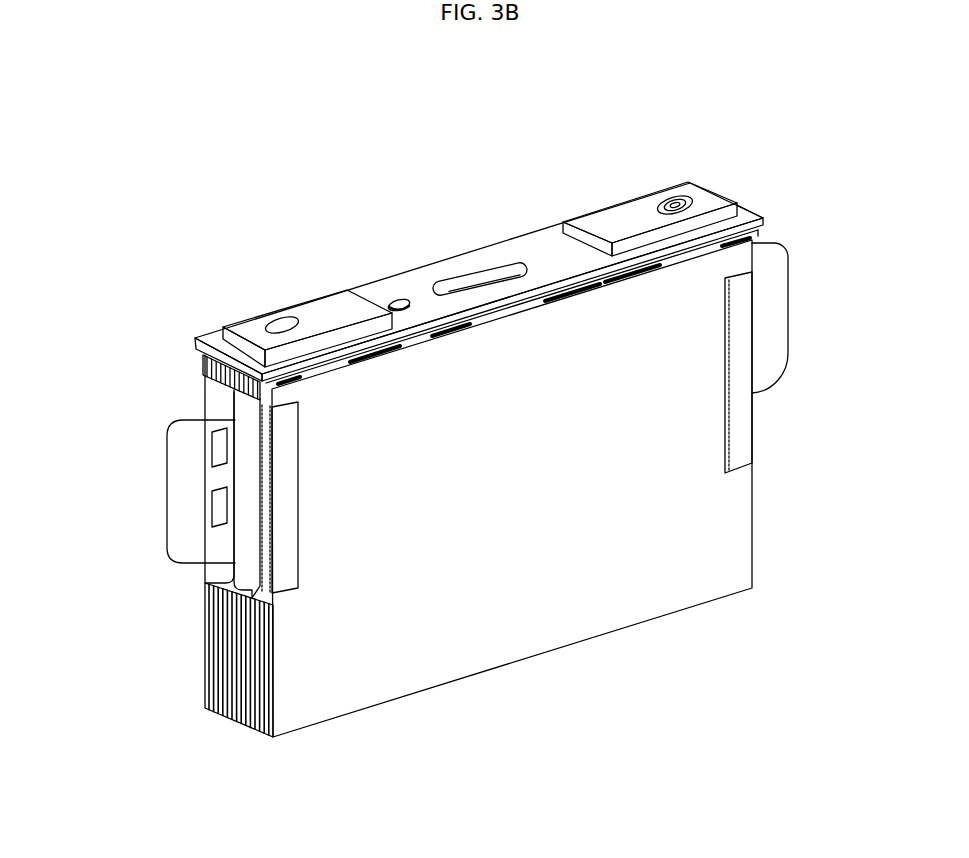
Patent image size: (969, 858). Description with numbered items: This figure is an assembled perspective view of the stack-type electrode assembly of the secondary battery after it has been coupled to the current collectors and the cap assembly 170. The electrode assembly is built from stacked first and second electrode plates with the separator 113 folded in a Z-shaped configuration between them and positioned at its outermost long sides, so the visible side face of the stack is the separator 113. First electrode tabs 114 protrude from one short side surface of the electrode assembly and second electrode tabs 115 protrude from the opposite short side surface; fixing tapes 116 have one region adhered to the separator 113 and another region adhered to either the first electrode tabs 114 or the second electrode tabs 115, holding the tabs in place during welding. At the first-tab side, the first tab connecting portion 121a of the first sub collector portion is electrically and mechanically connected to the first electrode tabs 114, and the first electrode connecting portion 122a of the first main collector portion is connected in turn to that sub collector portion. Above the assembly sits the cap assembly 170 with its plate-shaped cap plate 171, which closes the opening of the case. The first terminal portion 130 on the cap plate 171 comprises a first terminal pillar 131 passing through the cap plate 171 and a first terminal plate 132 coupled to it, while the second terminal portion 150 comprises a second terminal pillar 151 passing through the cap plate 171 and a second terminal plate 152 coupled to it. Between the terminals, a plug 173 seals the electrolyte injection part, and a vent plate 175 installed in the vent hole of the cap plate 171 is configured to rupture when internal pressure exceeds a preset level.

The separator 113 is at (540, 647).
The first electrode tabs 114 is at (178, 443).
The second electrode tabs 115 is at (775, 307).
The fixing tape 116 is at (287, 578).
The first tab connecting portion 121a is at (220, 478).
The first electrode connecting portion 122a is at (247, 545).
The first terminal portion 130 is at (307, 276).
The first terminal pillar 131 is at (262, 285).
The first terminal plate 132 is at (327, 305).
The second terminal portion 150 is at (663, 166).
The second terminal pillar 151 is at (665, 172).
The second terminal plate 152 is at (613, 217).
The cap assembly 170 is at (479, 265).
The cap plate 171 is at (547, 250).
The plug 173 is at (395, 303).
The vent plate 175 is at (545, 176).